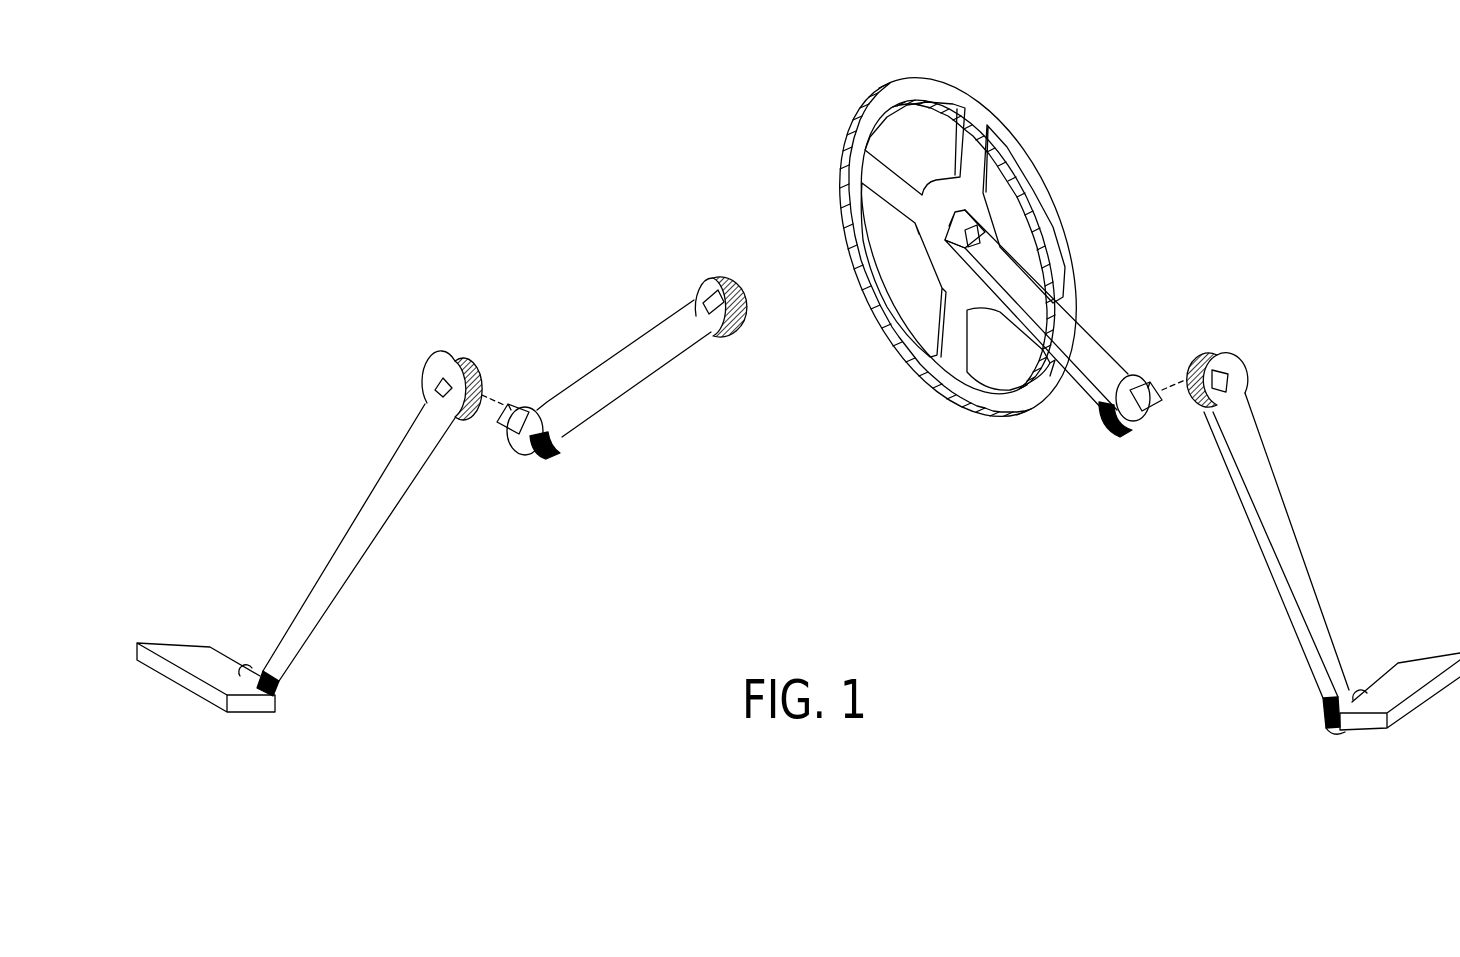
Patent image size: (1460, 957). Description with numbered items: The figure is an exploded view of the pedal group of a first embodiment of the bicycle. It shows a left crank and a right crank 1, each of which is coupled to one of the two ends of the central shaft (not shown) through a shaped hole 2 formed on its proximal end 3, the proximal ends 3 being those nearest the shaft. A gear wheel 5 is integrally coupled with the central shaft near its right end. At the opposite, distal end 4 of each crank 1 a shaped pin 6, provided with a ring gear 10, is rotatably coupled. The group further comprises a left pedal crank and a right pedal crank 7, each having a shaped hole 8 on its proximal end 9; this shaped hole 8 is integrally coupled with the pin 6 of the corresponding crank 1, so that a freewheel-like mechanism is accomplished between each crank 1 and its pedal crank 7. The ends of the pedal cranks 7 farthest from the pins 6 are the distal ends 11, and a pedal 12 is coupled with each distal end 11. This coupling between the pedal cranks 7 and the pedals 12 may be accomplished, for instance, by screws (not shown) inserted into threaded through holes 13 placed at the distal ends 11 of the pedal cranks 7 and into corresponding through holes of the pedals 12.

The crank 1 is at (620, 365).
The shaped hole 2 is at (713, 297).
The proximal end 3 is at (740, 283).
The distal end 4 is at (535, 463).
The gear wheel 5 is at (985, 112).
The shaped pin 6 is at (518, 423).
The pedal crank 7 is at (367, 496).
The shaped hole 8 is at (443, 383).
The proximal end 9 is at (472, 368).
The ring gear 10 is at (549, 454).
The distal end 11 is at (279, 687).
The pedal 12 is at (200, 665).
The threaded through hole 13 is at (248, 675).